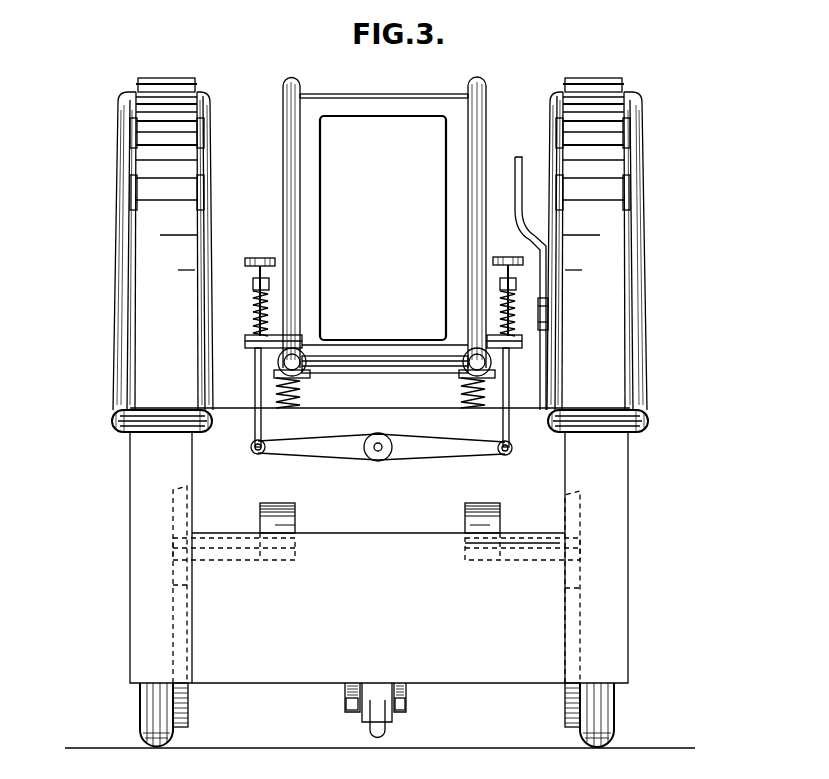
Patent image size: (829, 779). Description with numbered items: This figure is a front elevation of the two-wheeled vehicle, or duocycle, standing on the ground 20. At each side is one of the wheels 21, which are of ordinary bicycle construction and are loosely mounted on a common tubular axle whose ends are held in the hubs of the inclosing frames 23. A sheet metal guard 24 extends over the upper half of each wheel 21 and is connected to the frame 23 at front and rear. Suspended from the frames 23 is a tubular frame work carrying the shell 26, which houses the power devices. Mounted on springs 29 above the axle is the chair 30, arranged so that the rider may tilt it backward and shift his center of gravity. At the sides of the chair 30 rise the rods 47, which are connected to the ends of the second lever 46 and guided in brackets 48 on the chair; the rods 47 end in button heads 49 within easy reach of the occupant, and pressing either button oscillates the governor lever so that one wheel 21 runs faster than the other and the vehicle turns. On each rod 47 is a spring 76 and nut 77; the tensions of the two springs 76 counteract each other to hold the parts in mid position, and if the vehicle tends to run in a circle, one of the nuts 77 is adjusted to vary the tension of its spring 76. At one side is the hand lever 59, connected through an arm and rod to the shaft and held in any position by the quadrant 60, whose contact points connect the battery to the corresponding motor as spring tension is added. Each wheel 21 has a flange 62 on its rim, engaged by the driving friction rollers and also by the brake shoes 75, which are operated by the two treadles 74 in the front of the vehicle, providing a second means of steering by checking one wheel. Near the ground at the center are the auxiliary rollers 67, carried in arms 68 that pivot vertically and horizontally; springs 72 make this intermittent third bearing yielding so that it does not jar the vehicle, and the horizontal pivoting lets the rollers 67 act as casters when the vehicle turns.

The ground 20 is at (380, 739).
The wheels 21 is at (140, 713).
The inclosing frames 23 is at (148, 433).
The sheet metal guard 24 is at (380, 244).
The shell 26 is at (379, 545).
The springs 29 is at (301, 392).
The chair 30 is at (283, 127).
The second lever 46 is at (354, 460).
The rods 47 is at (255, 388).
The brackets 48 is at (250, 347).
The button heads 49 is at (256, 258).
The hand lever 59 is at (532, 140).
The quadrant 60 is at (548, 314).
The flange 62 is at (188, 709).
The auxiliary wheels or rollers 67 is at (372, 730).
The arms 68 is at (392, 719).
The springs 72 is at (406, 696).
The treadles 74 is at (296, 517).
The brake shoes 75 is at (186, 578).
The spring 76 is at (268, 307).
The nut 77 is at (270, 284).